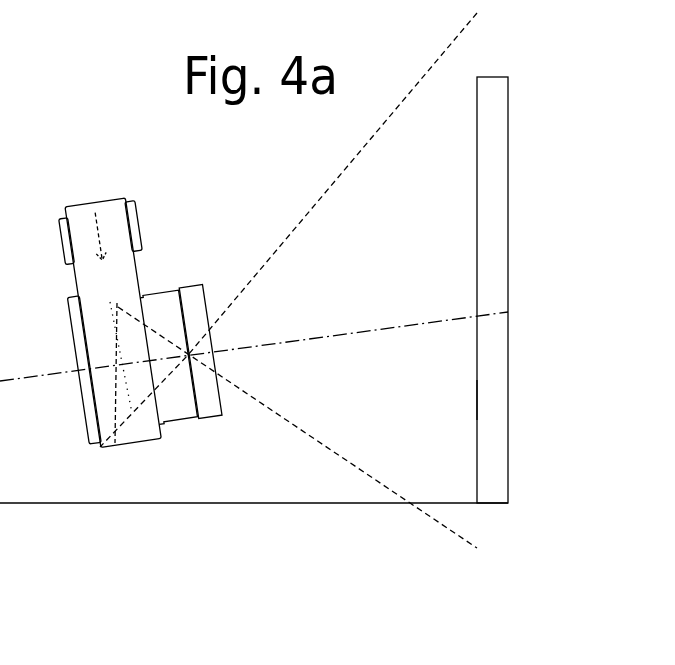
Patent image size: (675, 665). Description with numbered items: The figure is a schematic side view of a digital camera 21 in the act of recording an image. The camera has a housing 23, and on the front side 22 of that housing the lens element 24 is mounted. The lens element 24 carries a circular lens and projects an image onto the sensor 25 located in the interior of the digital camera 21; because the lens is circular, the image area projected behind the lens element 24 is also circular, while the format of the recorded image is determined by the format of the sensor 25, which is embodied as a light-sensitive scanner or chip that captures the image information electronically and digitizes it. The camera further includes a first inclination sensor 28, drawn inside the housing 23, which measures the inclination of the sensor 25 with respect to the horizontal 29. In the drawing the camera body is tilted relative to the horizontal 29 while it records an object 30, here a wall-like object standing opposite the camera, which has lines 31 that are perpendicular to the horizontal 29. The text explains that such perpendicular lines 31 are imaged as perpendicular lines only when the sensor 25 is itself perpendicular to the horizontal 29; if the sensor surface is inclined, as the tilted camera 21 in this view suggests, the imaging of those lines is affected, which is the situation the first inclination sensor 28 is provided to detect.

The digital camera 21 is at (156, 228).
The front side 22 is at (138, 275).
The housing 23 is at (83, 202).
The lens element 24 is at (210, 407).
The sensor 25 is at (100, 447).
The first inclination sensor 28 is at (102, 239).
The horizontal 29 is at (333, 503).
The object 30 is at (492, 210).
The lines 31 is at (475, 400).